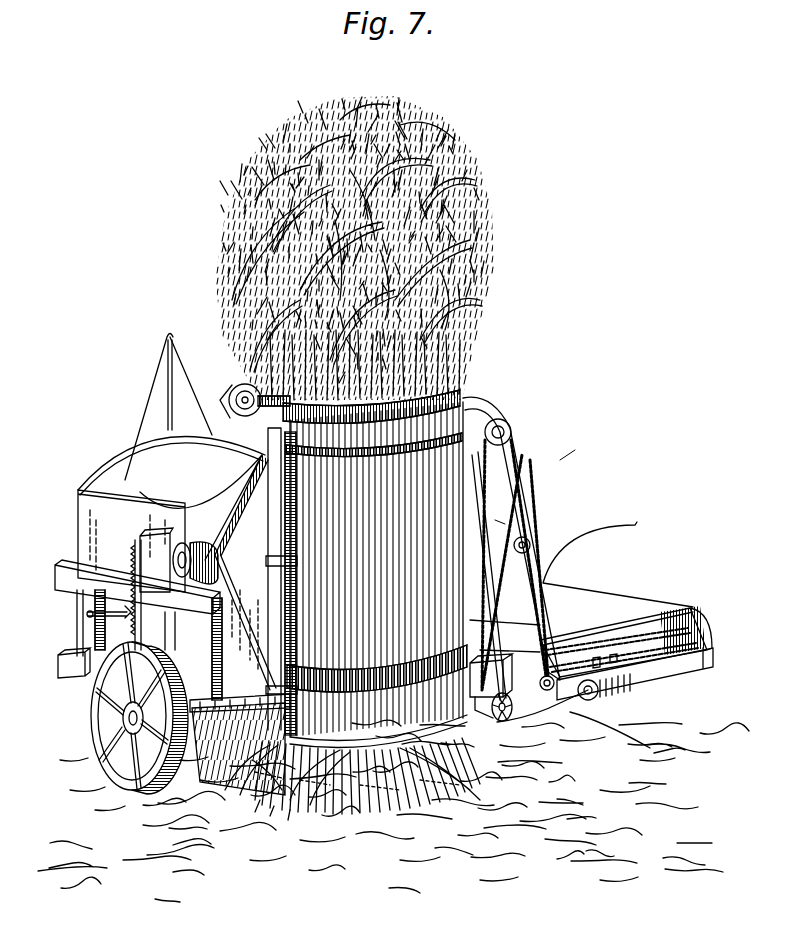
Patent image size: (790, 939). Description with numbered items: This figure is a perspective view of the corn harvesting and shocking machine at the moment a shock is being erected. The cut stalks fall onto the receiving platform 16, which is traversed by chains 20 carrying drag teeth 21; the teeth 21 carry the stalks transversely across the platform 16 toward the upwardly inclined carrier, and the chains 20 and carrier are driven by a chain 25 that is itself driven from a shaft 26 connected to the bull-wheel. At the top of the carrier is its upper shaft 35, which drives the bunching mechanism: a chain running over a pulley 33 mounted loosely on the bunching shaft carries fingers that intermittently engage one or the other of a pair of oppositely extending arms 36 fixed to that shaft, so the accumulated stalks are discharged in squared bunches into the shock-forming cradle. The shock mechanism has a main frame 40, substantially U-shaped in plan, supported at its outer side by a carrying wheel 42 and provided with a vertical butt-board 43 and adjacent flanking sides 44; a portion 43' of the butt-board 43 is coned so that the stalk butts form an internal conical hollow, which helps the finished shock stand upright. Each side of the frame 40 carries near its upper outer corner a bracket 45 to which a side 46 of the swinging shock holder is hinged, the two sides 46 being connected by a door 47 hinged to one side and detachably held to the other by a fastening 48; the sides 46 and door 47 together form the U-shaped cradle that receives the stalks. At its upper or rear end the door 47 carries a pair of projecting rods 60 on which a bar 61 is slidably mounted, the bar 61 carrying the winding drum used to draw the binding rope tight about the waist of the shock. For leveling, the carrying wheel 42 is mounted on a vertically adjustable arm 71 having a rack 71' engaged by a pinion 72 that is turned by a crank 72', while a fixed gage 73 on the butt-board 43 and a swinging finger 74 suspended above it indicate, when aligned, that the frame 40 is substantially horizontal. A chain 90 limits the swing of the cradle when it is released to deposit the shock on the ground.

The receiving platform 16 is at (640, 646).
The chains 20 is at (578, 643).
The drag teeth 21 is at (612, 655).
The chain 25 is at (545, 585).
The shaft 26 is at (535, 742).
The pulley 33 is at (235, 393).
The upper shaft of the carrier 35 is at (508, 416).
The oppositely extending arms 36 is at (240, 382).
The main frame 40 is at (60, 668).
The carrying wheel 42 is at (91, 718).
The butt-board 43 is at (166, 463).
The coned portion of the butt-board 43' is at (178, 454).
The flanking sides 44 is at (80, 492).
The bracket 45 is at (222, 556).
The side of the swinging shock holder 46 is at (240, 790).
The door 47 is at (505, 452).
The fastening 48 is at (297, 556).
The projecting rods 60 is at (455, 362).
The bar 61 is at (460, 395).
The vertically adjustable arm 71 is at (184, 547).
The rack 71' is at (129, 544).
The pinion 72 is at (81, 597).
The crank 72' is at (74, 606).
The fixed gage 73 is at (172, 426).
The swinging finger 74 is at (168, 372).
The chain 90 is at (270, 790).